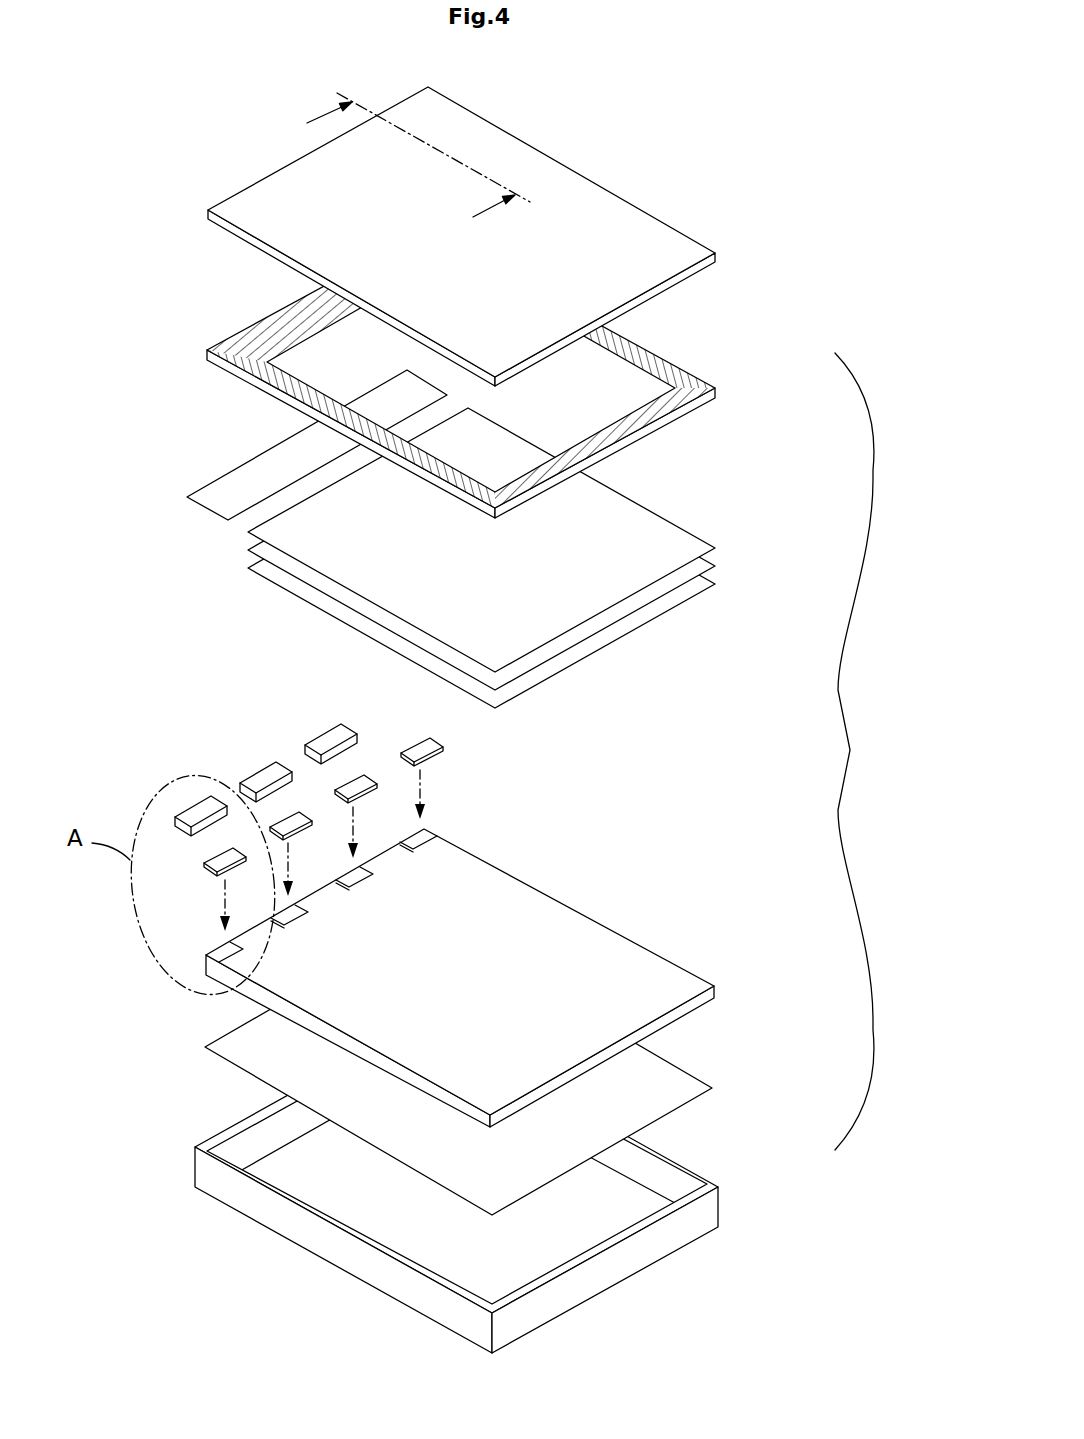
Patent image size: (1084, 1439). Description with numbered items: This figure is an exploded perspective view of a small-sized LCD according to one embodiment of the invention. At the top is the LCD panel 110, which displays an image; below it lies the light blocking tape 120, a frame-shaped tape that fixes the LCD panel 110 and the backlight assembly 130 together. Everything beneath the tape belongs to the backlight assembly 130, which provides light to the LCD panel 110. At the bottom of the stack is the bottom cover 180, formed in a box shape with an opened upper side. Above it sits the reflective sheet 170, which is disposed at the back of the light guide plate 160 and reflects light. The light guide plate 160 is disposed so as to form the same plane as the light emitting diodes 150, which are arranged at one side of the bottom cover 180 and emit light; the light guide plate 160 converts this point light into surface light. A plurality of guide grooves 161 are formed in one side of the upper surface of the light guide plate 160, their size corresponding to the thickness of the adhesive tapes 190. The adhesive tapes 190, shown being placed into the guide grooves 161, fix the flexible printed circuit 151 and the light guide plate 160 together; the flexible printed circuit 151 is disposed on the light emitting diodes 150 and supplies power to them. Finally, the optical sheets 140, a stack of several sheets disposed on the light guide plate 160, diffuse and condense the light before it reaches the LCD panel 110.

The LCD panel 110 is at (678, 250).
The light blocking tape 120 is at (693, 380).
The backlight assembly 130 is at (870, 751).
The optical sheets 140 is at (732, 548).
The light emitting diodes 150 is at (195, 810).
The flexible printed circuit 151 is at (233, 483).
The light guide plate 160 is at (690, 990).
The guide grooves 161 is at (443, 820).
The reflective sheet 170 is at (692, 1088).
The bottom cover 180 is at (692, 1167).
The adhesive tapes 190 is at (420, 737).